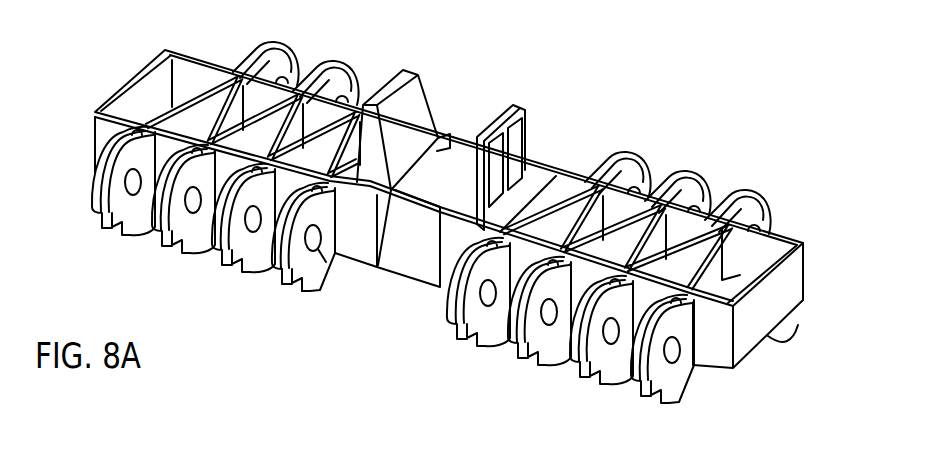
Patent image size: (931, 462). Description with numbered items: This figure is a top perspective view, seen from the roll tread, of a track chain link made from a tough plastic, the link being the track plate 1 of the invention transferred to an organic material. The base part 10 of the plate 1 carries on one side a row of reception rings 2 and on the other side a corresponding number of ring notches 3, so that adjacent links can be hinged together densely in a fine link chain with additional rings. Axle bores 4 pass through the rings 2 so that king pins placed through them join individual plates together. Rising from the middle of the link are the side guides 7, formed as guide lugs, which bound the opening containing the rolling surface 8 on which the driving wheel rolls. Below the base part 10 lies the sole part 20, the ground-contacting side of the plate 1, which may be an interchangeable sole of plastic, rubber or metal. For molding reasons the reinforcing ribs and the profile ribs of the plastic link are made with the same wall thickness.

The track plate 1 is at (691, 98).
The reception rings 2 is at (290, 52).
The ring notches 3 is at (720, 192).
The axle bores 4 is at (322, 276).
The side guides 7 is at (398, 78).
The rolling surface 8 is at (449, 168).
The base part 10 is at (795, 228).
The sole part 20 is at (290, 320).